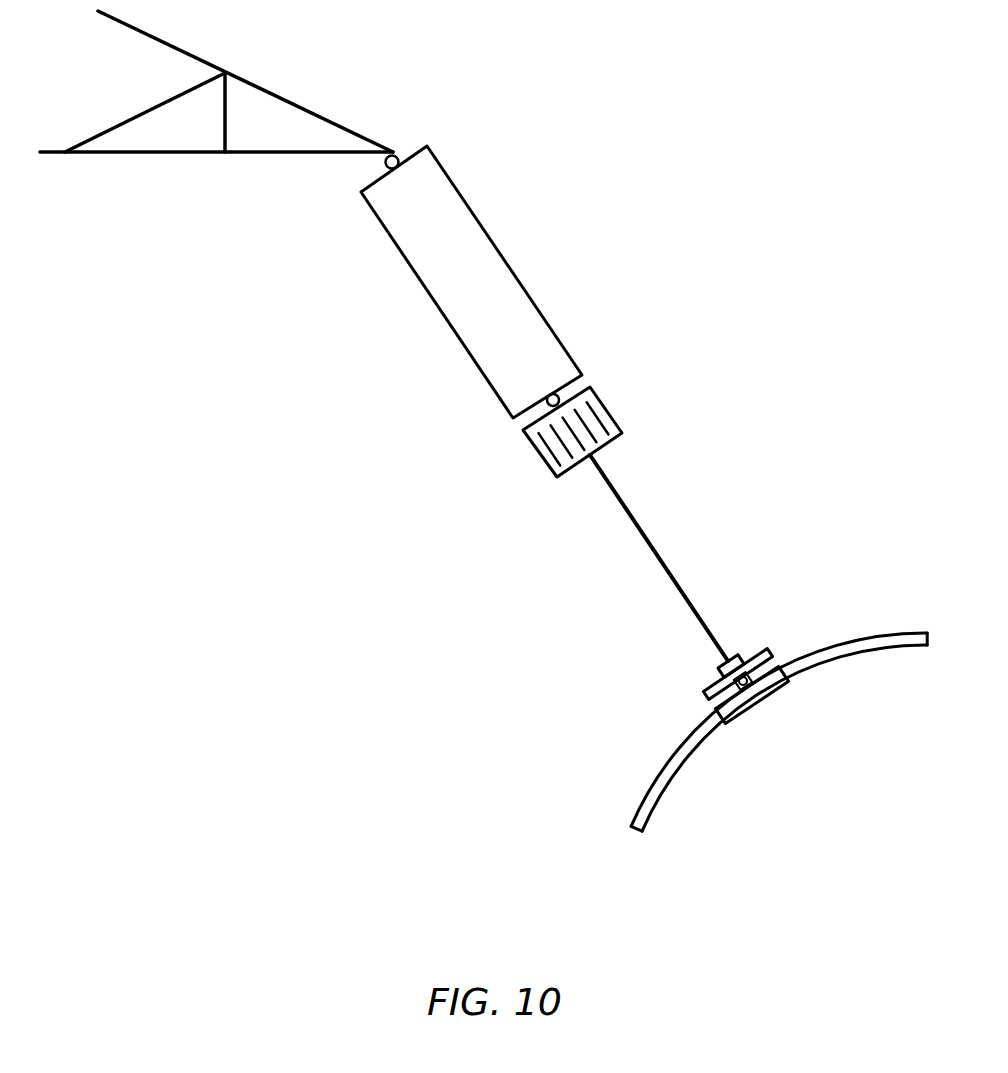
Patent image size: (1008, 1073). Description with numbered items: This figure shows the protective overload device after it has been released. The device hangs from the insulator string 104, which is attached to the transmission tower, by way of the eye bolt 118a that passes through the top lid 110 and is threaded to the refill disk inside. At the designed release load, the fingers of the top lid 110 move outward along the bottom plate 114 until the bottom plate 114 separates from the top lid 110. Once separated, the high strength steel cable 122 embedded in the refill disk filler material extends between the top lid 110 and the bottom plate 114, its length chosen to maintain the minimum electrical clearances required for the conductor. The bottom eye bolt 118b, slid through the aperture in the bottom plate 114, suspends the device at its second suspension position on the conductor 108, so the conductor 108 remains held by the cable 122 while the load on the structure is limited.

The insulator string 104 is at (471, 282).
The conductor 108 is at (779, 732).
The top lid 110 is at (602, 432).
The bottom plate 114 is at (757, 644).
The eye bolt 118a is at (610, 376).
The bottom eye bolt 118b is at (797, 662).
The steel cable 122 is at (667, 566).